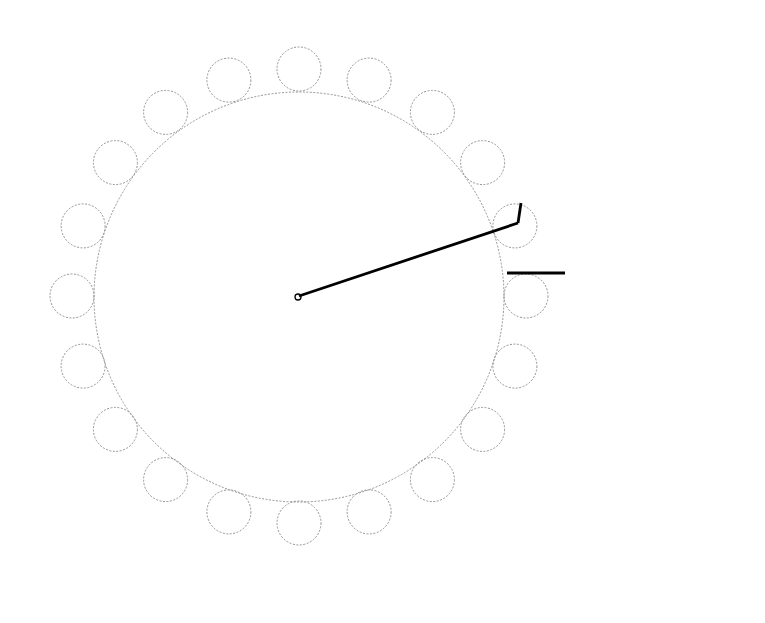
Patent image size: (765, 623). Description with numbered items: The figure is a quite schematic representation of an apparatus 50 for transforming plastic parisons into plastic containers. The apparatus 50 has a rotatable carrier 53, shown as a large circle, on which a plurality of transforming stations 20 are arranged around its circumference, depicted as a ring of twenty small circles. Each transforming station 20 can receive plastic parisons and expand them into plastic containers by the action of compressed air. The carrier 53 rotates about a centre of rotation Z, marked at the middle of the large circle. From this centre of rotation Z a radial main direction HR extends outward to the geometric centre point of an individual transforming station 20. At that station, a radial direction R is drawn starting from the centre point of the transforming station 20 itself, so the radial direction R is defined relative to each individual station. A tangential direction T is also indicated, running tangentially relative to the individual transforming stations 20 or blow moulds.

The rotor assembly 50 is at (516, 124).
The rotatable carrier 53 is at (438, 428).
The transforming station 20 is at (518, 370).
The centre of rotation Z is at (298, 297).
The radial main direction HR is at (408, 259).
The radial direction R is at (521, 213).
The tangential direction T is at (565, 273).